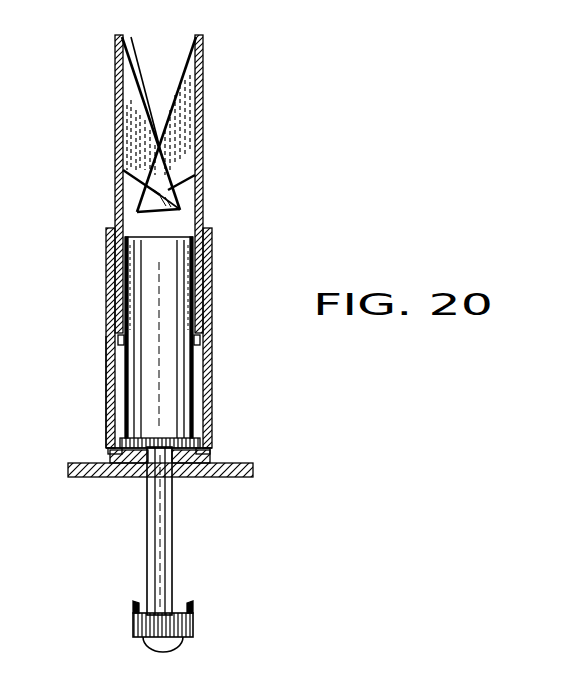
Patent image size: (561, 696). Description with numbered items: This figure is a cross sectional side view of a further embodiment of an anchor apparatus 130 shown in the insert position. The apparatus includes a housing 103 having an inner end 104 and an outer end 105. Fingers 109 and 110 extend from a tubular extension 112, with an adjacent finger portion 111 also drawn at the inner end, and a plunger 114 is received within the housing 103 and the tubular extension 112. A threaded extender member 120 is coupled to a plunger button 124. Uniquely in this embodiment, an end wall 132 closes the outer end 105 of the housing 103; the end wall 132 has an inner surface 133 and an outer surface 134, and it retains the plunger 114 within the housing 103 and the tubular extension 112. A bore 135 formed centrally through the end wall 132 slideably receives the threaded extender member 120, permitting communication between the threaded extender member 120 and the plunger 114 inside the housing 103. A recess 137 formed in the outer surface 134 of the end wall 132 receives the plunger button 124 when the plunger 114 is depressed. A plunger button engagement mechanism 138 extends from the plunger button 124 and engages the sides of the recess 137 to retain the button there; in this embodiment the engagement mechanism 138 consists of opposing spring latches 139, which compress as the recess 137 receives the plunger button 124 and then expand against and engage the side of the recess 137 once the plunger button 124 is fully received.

The finger 109 is at (108, 86).
The finger 110 is at (210, 90).
The left pierced flap 111 is at (110, 173).
The tubular extension 112 is at (212, 200).
The inner end 104 is at (100, 230).
The housing 103 is at (108, 345).
The plunger 114 is at (200, 287).
The inner surface 133 is at (175, 432).
The bore 135 is at (108, 455).
The outer end 105 is at (212, 460).
The anchor apparatus 130 is at (320, 391).
The end wall 132 is at (130, 483).
The outer surface 134 is at (190, 480).
The threaded extender member 120 is at (173, 545).
The recess 137 is at (147, 482).
The plunger button 124 is at (194, 627).
The plunger button engagement mechanism 138 is at (126, 609).
The spring latches 139 is at (200, 610).